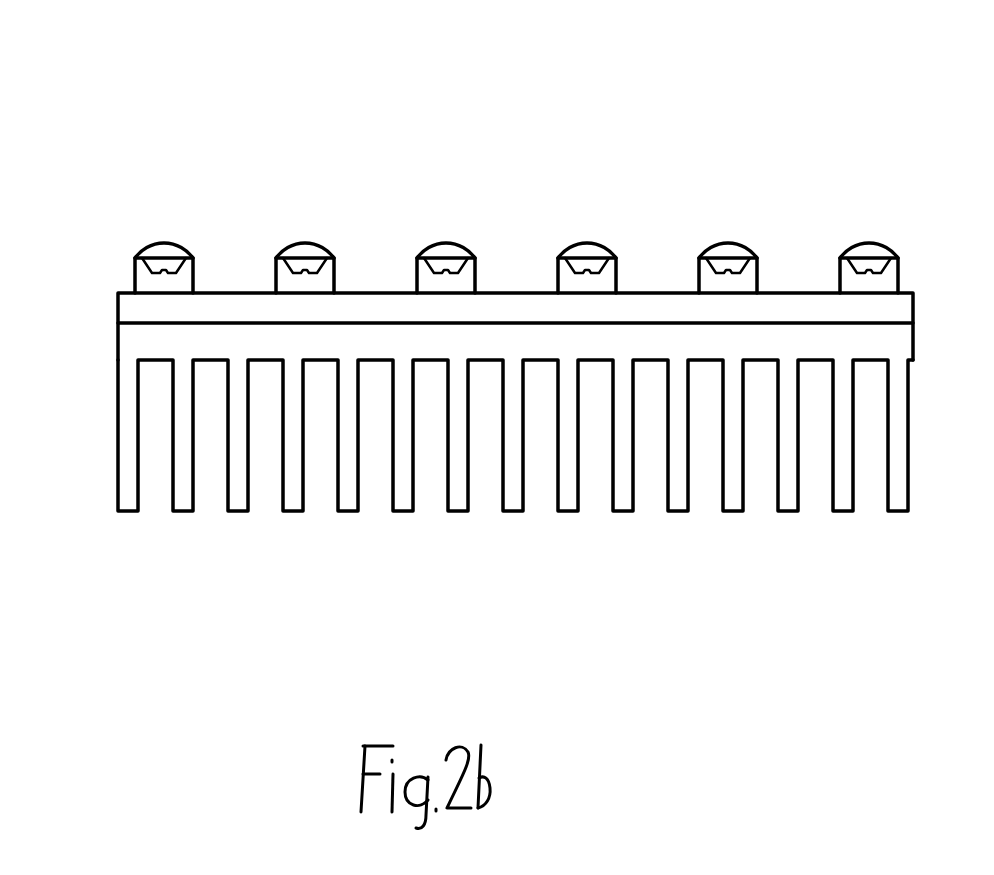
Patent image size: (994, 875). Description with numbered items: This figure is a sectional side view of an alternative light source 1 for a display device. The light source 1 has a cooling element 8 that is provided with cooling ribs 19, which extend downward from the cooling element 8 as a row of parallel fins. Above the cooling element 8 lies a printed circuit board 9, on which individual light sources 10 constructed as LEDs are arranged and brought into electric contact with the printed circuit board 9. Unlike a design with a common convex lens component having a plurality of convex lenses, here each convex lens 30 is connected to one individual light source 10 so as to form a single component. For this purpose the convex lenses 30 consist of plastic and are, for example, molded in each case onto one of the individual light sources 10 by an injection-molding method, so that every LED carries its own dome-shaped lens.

The light source 1 is at (100, 245).
The cooling element 8 is at (305, 338).
The printed circuit board 9 is at (667, 308).
The individual light source 10 is at (442, 283).
The cooling ribs 19 is at (185, 497).
The convex lens 30 is at (167, 255).